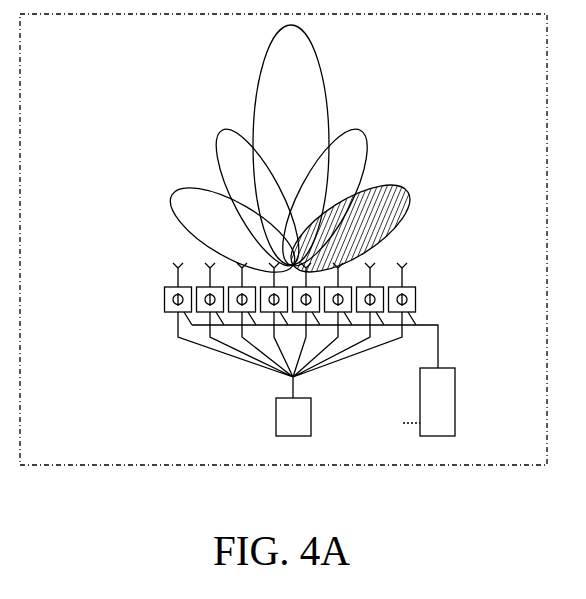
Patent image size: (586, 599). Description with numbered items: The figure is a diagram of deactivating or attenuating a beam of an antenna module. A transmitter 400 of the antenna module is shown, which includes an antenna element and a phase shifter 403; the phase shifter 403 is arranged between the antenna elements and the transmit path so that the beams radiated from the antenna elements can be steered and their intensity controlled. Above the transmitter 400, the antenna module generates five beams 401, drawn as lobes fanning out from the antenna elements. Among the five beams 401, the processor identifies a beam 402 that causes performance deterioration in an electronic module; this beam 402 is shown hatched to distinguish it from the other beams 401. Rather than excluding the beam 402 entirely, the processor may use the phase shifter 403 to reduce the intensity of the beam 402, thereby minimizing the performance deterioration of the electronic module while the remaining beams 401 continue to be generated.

The transmitter 400 is at (155, 270).
The beams 401 is at (155, 47).
The beam 402 is at (408, 186).
The phase shifter 403 is at (428, 263).